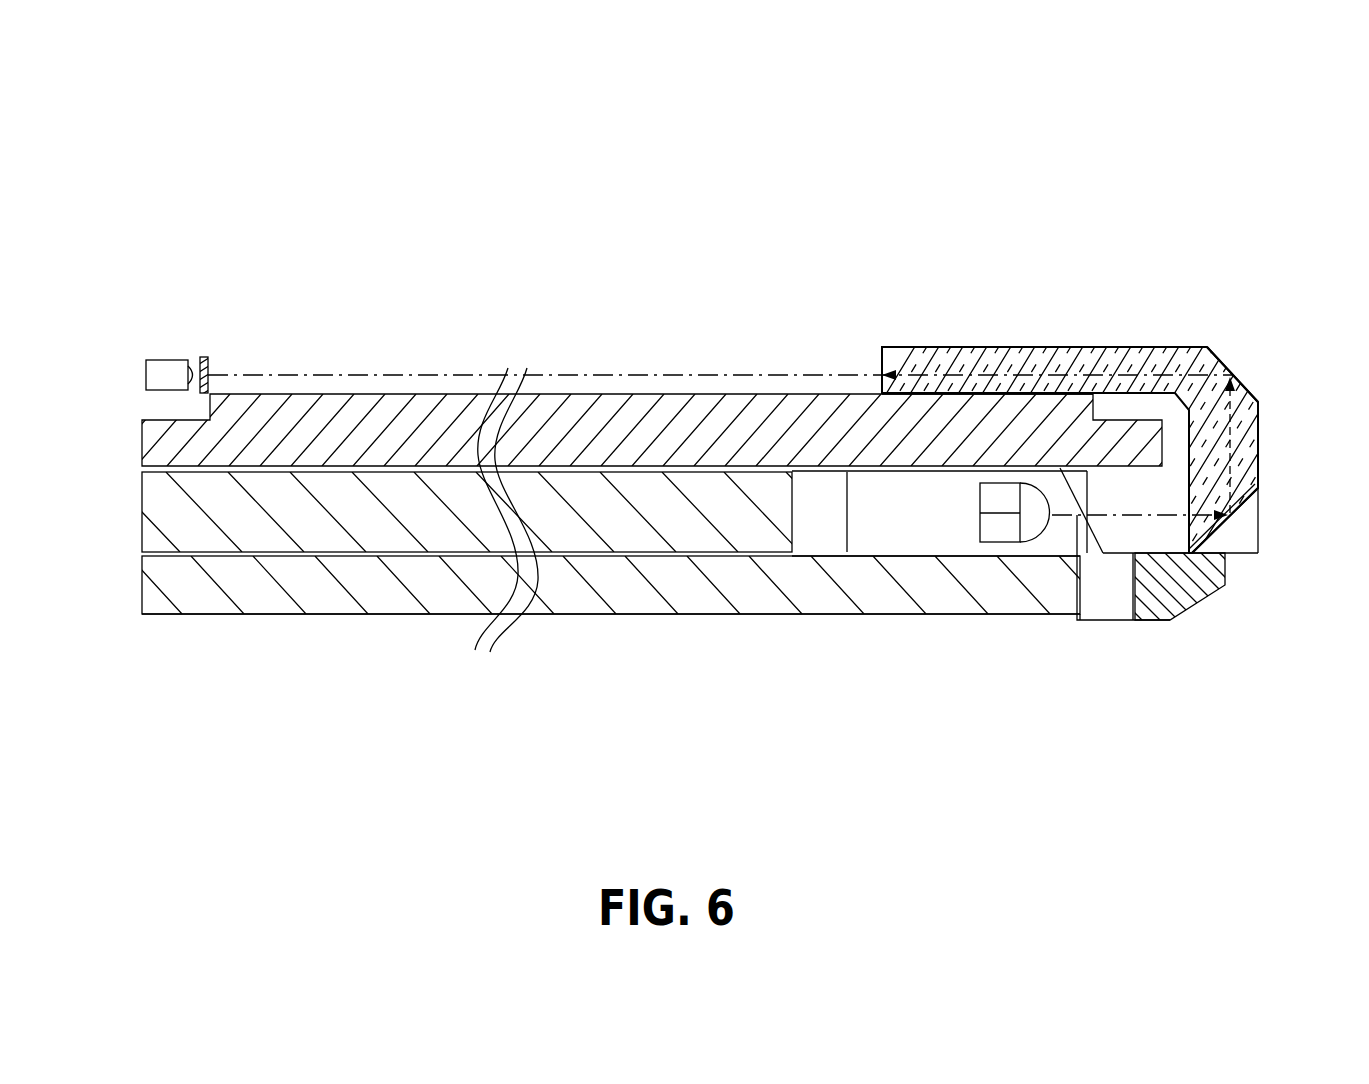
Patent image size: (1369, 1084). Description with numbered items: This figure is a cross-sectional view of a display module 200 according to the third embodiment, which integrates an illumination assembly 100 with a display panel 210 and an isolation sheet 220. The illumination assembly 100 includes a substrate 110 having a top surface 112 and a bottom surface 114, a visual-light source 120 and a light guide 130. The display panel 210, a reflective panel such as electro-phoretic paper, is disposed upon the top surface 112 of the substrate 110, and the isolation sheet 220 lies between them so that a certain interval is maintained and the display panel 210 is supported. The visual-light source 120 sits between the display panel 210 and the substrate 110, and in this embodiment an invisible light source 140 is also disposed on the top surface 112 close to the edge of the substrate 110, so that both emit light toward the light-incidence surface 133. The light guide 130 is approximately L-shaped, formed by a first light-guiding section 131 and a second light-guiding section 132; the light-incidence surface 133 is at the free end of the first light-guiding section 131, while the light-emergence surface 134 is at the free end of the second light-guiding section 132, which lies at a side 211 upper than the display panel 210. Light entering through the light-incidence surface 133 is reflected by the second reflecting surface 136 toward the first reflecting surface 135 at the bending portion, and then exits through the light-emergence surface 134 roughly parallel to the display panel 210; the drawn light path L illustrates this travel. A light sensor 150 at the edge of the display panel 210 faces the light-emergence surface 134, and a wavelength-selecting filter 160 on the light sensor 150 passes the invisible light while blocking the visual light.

The illumination assembly 100 is at (113, 318).
The substrate 110 is at (147, 582).
The top surface 112 is at (808, 546).
The bottom surface 114 is at (810, 622).
The visual-light source 120 is at (995, 497).
The light guide 130 is at (1092, 338).
The first light-guiding section 131 is at (1240, 440).
The second light-guiding section 132 is at (940, 358).
The light-incidence surface 133 is at (1187, 488).
The light-emergence surface 134 is at (880, 358).
The first reflecting surface 135 is at (1227, 368).
The second reflecting surface 136 is at (1255, 520).
The invisible light source 140 is at (992, 530).
The light sensor 150 is at (167, 360).
The wavelength-selecting filter 160 is at (205, 357).
The display module 200 is at (1185, 158).
The display panel 210 is at (146, 434).
The side 211 is at (1000, 390).
The isolation sheet 220 is at (225, 537).
The light L is at (1133, 515).